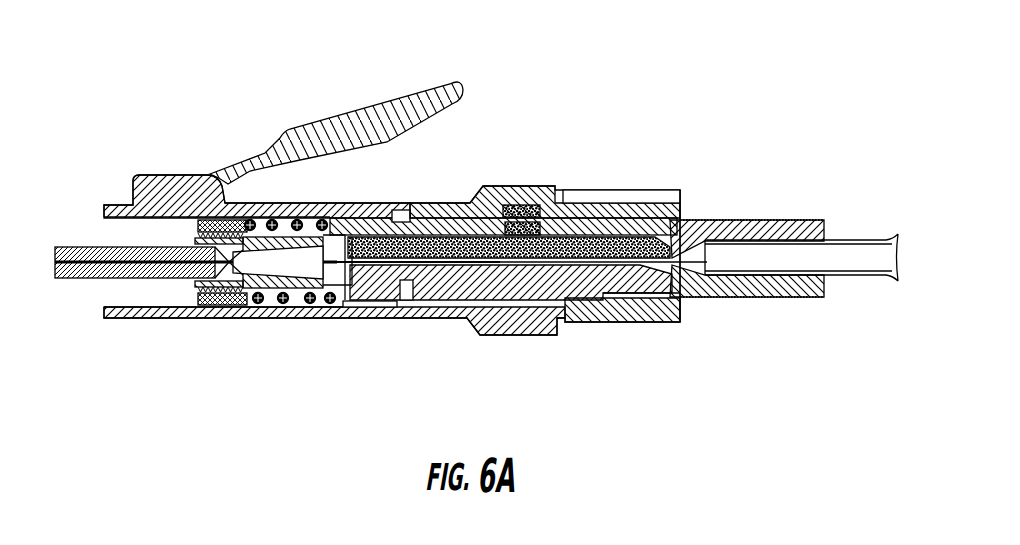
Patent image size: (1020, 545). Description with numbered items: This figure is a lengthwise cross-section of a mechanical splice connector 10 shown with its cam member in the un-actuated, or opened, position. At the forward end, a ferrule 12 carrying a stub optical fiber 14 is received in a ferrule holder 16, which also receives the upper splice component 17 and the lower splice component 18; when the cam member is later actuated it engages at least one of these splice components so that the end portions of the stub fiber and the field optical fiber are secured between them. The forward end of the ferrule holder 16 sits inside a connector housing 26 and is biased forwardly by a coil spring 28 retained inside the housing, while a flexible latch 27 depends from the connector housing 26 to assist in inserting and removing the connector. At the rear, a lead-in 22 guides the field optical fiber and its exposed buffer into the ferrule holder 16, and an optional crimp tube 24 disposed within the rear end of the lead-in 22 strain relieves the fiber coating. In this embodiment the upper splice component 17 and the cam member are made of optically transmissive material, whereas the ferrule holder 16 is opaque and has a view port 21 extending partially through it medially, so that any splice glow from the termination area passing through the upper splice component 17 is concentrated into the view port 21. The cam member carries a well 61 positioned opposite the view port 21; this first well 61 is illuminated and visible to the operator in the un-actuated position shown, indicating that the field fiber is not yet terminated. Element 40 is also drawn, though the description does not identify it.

The mechanical splice connector 10 is at (483, 55).
The ferrule 12 is at (73, 247).
The stub optical fiber 14 is at (132, 265).
The ferrule holder 16 is at (750, 297).
The upper splice component 17 is at (440, 236).
The splice component 18 is at (513, 283).
The view port 21 is at (553, 215).
The lead-in 22 is at (743, 233).
The crimp tube 24 is at (855, 240).
The connector housing 26 is at (478, 332).
The flexible latch 27 is at (347, 123).
The coil spring 28 is at (300, 222).
The retention nut 40 is at (643, 322).
The well 61 is at (520, 215).